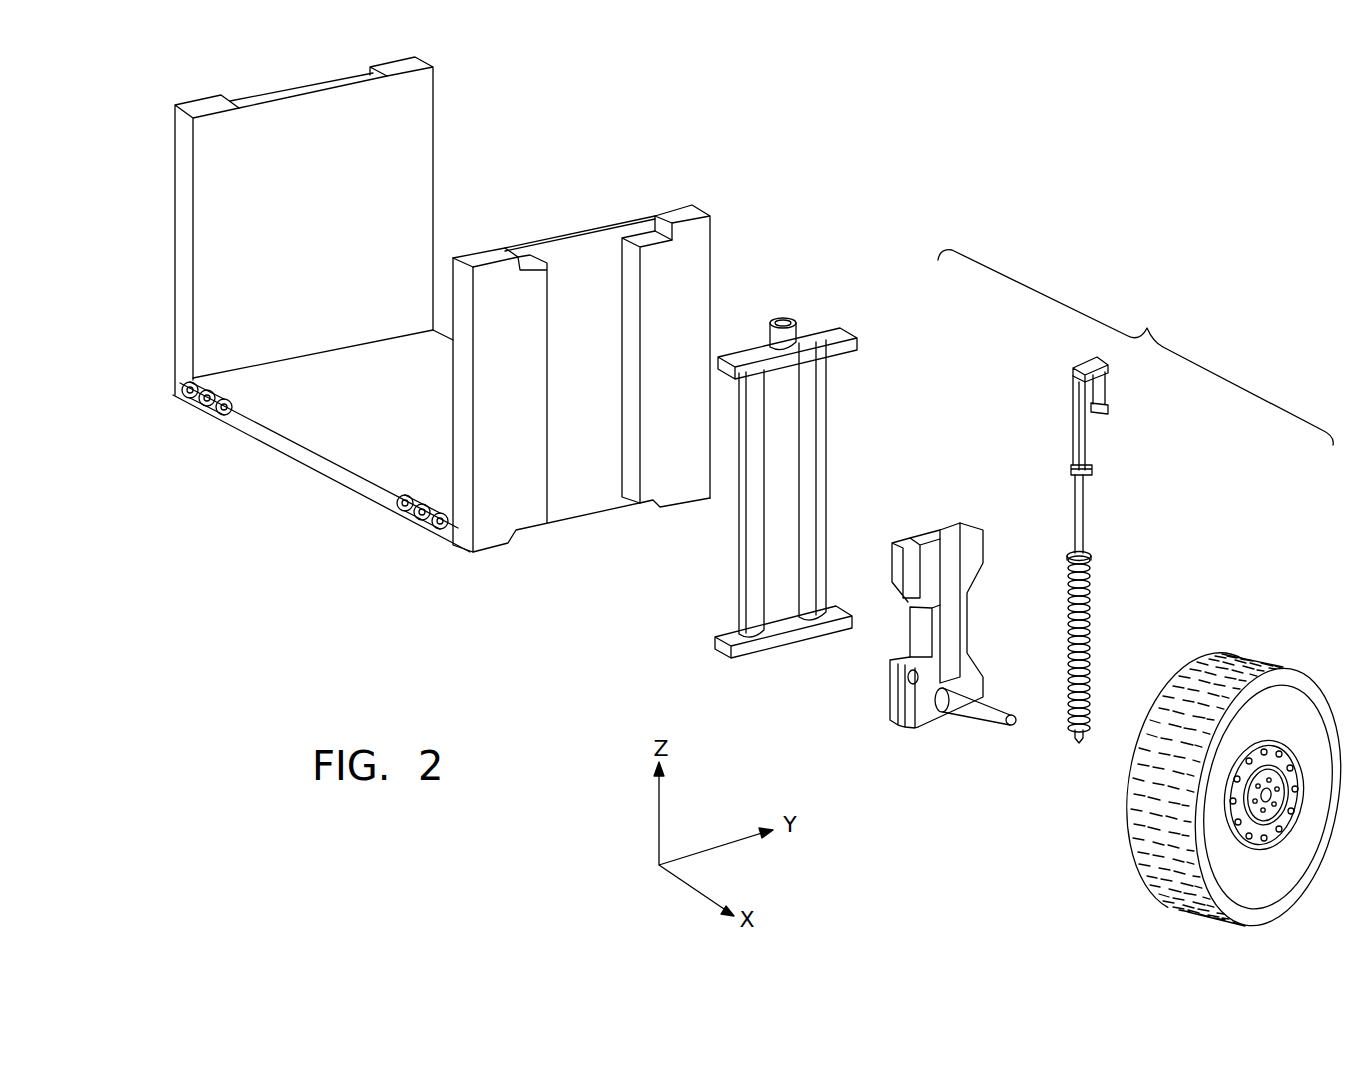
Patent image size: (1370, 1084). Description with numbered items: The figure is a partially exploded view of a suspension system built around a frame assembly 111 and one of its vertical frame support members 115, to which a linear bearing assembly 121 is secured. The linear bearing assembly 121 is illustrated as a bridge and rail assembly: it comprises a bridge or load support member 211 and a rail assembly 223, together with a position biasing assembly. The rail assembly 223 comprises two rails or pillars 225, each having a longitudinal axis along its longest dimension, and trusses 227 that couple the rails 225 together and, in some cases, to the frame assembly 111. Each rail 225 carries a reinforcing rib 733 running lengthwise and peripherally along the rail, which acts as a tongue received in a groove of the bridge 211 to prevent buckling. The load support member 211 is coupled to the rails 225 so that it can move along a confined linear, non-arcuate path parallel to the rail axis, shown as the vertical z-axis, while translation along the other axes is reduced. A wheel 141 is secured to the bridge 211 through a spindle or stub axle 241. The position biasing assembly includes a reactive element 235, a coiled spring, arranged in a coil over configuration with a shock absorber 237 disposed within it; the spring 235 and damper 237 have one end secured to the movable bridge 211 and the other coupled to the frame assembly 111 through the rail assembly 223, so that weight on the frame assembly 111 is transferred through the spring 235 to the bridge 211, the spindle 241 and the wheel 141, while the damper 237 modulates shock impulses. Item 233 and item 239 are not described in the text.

The frame assembly 111 is at (297, 460).
The vertical frame support member 115 is at (505, 455).
The linear bearing assembly 121 is at (1135, 347).
The load support member 211 is at (913, 630).
The rail assembly 223 is at (748, 474).
The rail 225 is at (805, 455).
The truss 227 is at (837, 322).
The reinforcing rib 733 is at (827, 372).
The suspension assembly 233 is at (1095, 607).
The reactive element 235 is at (1090, 582).
The shock absorber 237 is at (1090, 627).
The spring end 239 is at (1094, 553).
The spindle 241 is at (990, 721).
The wheel 141 is at (1135, 838).